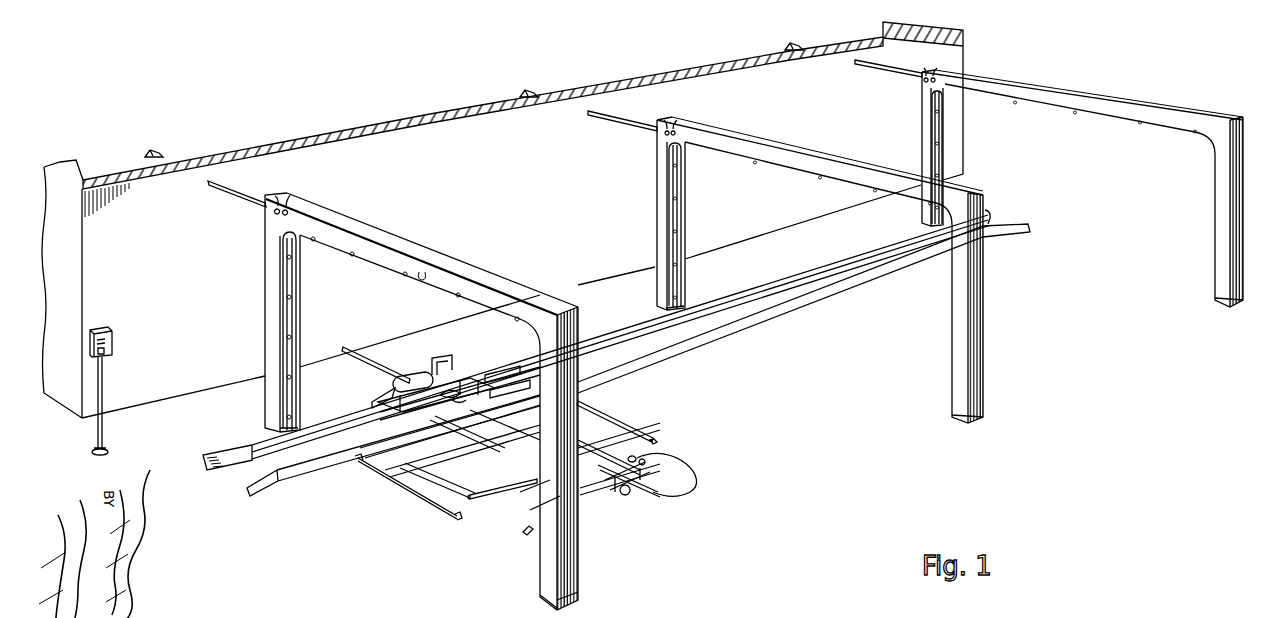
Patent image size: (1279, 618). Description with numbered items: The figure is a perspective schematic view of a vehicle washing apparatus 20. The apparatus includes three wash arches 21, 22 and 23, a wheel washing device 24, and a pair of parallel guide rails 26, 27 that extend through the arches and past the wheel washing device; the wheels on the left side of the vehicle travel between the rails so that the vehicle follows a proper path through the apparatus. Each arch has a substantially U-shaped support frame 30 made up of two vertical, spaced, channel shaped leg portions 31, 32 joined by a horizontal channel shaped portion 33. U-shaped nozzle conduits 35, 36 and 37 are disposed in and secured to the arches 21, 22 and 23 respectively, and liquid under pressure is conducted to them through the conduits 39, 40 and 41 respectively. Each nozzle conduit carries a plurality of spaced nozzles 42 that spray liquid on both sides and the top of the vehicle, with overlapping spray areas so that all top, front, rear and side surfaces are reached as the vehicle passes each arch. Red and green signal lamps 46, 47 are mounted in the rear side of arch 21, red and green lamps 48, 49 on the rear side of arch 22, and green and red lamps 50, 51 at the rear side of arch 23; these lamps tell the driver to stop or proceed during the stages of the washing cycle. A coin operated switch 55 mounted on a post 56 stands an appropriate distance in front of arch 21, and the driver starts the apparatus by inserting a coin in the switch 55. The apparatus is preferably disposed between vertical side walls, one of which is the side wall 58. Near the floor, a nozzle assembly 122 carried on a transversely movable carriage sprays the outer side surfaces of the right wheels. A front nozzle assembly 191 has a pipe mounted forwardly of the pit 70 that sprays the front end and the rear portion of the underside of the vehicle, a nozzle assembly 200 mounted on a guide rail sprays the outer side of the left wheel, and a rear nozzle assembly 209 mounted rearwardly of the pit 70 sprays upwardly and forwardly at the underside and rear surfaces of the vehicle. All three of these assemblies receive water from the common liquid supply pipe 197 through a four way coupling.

The vehicle washing apparatus 20 is at (326, 83).
The wash arch 21 is at (586, 581).
The wash arch 22 is at (991, 405).
The wash arch 23 is at (1219, 301).
The wheel washing device 24 is at (512, 511).
The guide rail 26 is at (624, 320).
The guide rail 27 is at (693, 334).
The U-shaped support frame 30 is at (532, 590).
The leg portion 31 is at (265, 385).
The leg portion 32 is at (579, 549).
The horizontal channel shaped portion 33 is at (458, 263).
The nozzle conduit 35 is at (299, 319).
The nozzle conduit 36 is at (685, 216).
The nozzle conduit 37 is at (944, 139).
The conduit 39 is at (236, 199).
The conduit 40 is at (610, 117).
The conduit 41 is at (883, 69).
The nozzles 42 is at (297, 395).
The signal lamp 46 is at (276, 203).
The signal lamp 47 is at (287, 202).
The signal lamp 48 is at (667, 126).
The signal lamp 49 is at (678, 121).
The signal lamp 50 is at (927, 75).
The signal lamp 51 is at (939, 76).
The coin operated switch 55 is at (112, 341).
The post 56 is at (106, 441).
The side wall 58 is at (450, 113).
The pit 70 is at (436, 450).
The nozzle assembly 122 is at (640, 458).
The front nozzle assembly 191 is at (634, 422).
The liquid supply pipe 197 is at (374, 352).
The nozzle assembly 200 is at (433, 372).
The rear nozzle assembly 209 is at (422, 510).